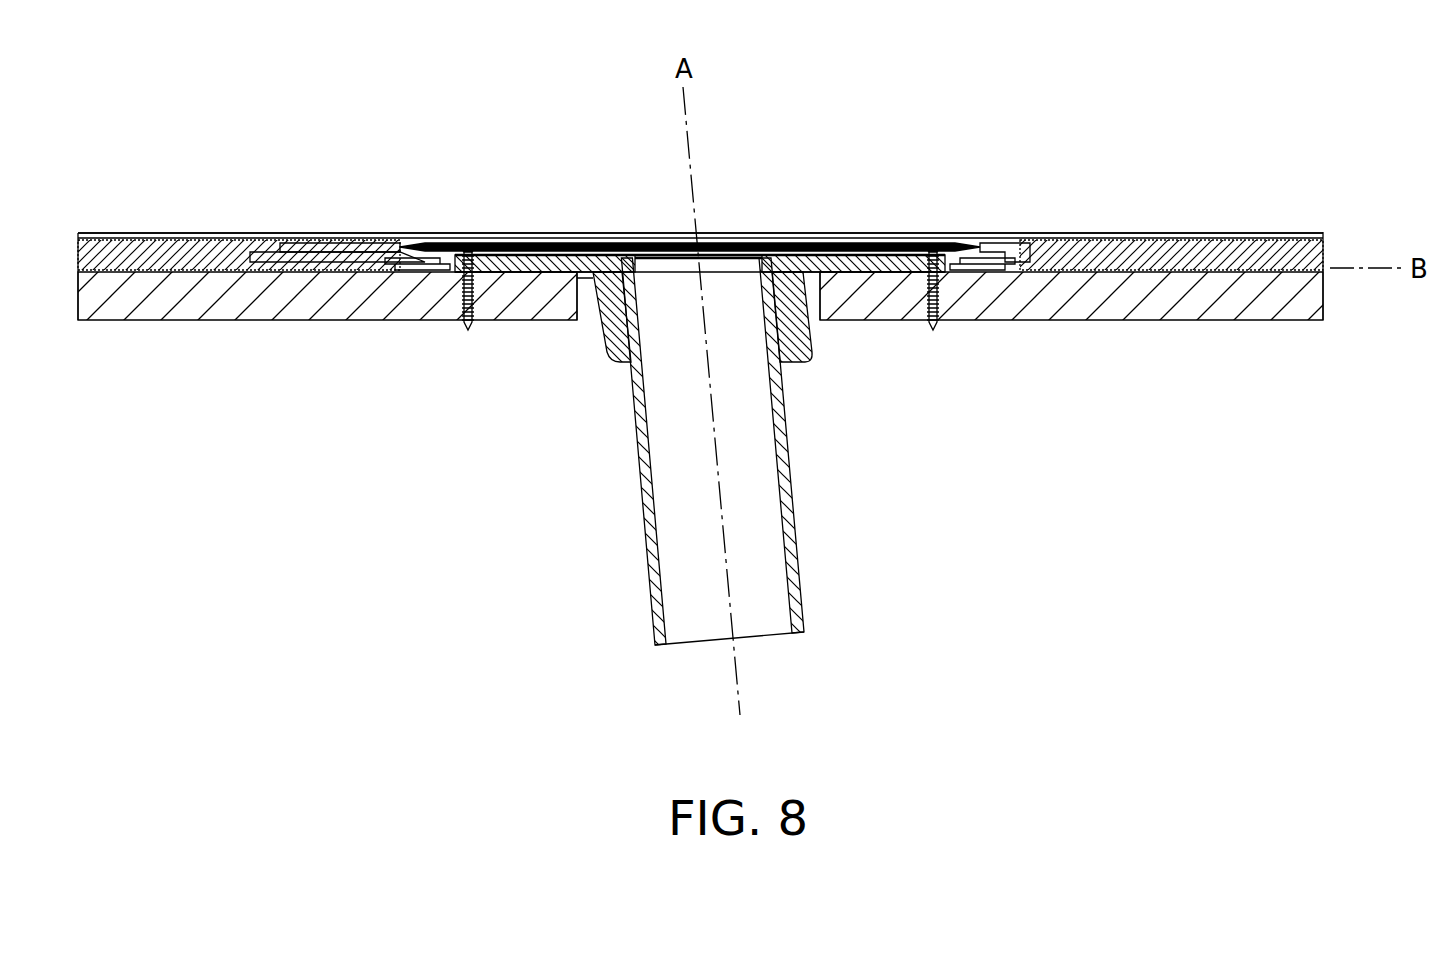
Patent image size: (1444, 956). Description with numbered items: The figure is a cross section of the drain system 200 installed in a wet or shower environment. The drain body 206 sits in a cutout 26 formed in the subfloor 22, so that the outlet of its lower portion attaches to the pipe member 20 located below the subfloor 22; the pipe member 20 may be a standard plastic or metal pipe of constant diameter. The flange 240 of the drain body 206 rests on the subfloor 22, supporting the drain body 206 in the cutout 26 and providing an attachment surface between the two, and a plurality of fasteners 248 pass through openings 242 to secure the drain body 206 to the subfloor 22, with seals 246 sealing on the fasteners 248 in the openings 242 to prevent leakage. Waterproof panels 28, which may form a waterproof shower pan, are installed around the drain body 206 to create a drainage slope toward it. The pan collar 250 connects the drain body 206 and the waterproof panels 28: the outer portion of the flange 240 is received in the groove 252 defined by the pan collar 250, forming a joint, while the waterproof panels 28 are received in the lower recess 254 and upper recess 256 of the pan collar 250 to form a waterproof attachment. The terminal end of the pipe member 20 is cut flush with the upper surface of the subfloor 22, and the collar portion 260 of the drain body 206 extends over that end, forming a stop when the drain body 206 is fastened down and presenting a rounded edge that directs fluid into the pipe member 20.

The pipe member 20 is at (795, 530).
The subfloor 22 is at (1124, 300).
The cutout 26 is at (582, 300).
The waterproof panels 28 is at (158, 237).
The drain system 200 is at (1073, 118).
The drain body 206 is at (613, 235).
The flange 240 is at (865, 237).
The openings 242 is at (452, 270).
The seals 246 is at (466, 238).
The fasteners 248 is at (467, 333).
The pan collar 250 is at (960, 272).
The groove 252 is at (1023, 237).
The lower recess 254 is at (393, 278).
The upper recess 256 is at (357, 237).
The collar portion 260 is at (777, 237).